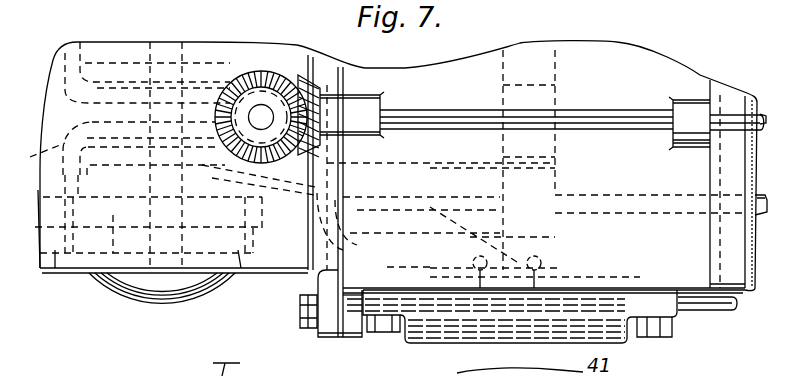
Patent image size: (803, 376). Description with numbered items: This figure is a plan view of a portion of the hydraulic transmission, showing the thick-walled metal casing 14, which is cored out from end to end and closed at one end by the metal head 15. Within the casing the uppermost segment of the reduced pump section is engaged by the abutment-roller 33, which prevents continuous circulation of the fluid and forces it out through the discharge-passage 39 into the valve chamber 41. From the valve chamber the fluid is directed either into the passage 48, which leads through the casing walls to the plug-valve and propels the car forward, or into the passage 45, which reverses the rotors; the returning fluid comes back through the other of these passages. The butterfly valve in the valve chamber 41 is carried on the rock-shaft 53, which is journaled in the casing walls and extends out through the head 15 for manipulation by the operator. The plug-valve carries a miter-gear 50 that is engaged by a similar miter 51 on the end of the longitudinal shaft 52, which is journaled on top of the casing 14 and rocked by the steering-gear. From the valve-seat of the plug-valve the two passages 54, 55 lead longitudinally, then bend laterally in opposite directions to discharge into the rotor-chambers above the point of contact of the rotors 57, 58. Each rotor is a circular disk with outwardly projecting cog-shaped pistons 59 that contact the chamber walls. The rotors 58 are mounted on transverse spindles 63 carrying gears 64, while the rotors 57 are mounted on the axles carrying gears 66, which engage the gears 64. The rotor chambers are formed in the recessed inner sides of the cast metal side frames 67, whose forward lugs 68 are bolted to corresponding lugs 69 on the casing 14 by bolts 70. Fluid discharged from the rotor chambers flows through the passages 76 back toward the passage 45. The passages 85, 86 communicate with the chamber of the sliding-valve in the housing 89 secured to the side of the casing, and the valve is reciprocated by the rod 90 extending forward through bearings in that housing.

The metal casing 14 is at (527, 167).
The metal head 15 is at (742, 267).
The abutment-roller 33 is at (558, 93).
The discharge-passage 39 is at (508, 293).
The valve chamber 41 is at (555, 185).
The passage 45 is at (455, 172).
The passage 48 is at (403, 213).
The miter-gear 50 is at (272, 70).
The miter 51 is at (318, 90).
The longitudinal shaft 52 is at (617, 128).
The rock-shaft 53 is at (758, 215).
The passage 54 is at (110, 62).
The passage 55 is at (40, 153).
The rotor 57 is at (38, 215).
The rotor 58 is at (107, 292).
The piston 59 is at (245, 8).
The transverse spindle 63 is at (148, 214).
The gear 64 is at (242, 272).
The gear 66 is at (54, 270).
The side frame 67 is at (173, 297).
The lug 68 is at (327, 338).
The lug 69 is at (350, 338).
The bolt 70 is at (300, 325).
The passage 76 is at (217, 62).
The passage 85 is at (465, 280).
The passage 86 is at (543, 260).
The housing 89 is at (552, 323).
The rod 90 is at (717, 307).